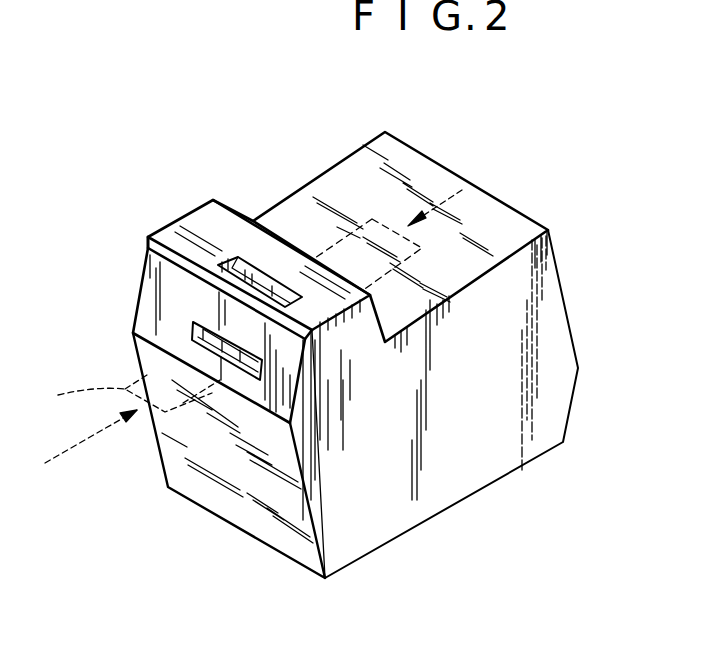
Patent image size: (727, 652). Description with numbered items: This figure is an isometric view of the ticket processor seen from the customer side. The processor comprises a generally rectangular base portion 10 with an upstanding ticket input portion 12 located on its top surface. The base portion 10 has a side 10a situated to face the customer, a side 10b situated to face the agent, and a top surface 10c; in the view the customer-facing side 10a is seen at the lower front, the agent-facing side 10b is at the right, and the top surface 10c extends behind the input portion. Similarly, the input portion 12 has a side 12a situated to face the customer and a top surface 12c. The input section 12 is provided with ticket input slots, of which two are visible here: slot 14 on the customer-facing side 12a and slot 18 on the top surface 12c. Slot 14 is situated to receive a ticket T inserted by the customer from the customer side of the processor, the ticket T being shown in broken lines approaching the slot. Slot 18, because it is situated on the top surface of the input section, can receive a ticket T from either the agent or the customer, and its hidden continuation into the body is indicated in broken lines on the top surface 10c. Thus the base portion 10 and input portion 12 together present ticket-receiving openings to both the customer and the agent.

The base portion 10 is at (383, 355).
The side of base portion 10a is at (248, 508).
The side of base portion 10b is at (547, 287).
The top surface of base portion 10c is at (507, 227).
The ticket input portion 12 is at (208, 276).
The side of input portion 12a is at (232, 208).
The top surface of input portion 12c is at (177, 238).
The ticket input slot 14 is at (195, 348).
The ticket input slot 18 is at (263, 287).
The ticket T is at (130, 419).